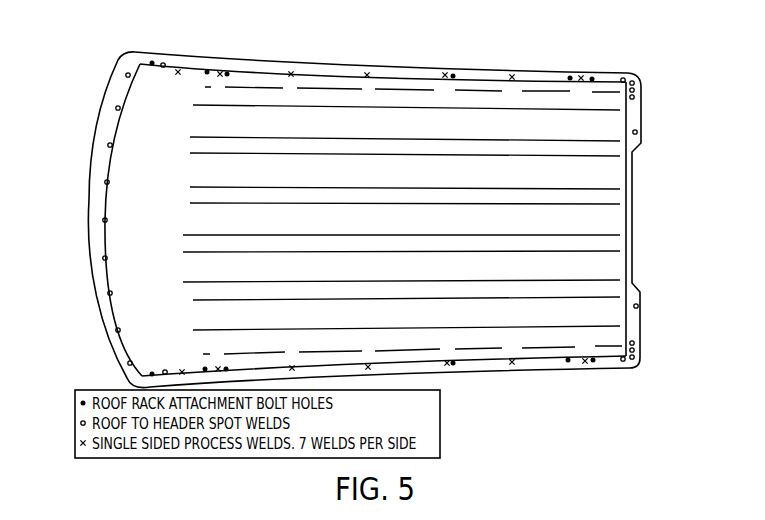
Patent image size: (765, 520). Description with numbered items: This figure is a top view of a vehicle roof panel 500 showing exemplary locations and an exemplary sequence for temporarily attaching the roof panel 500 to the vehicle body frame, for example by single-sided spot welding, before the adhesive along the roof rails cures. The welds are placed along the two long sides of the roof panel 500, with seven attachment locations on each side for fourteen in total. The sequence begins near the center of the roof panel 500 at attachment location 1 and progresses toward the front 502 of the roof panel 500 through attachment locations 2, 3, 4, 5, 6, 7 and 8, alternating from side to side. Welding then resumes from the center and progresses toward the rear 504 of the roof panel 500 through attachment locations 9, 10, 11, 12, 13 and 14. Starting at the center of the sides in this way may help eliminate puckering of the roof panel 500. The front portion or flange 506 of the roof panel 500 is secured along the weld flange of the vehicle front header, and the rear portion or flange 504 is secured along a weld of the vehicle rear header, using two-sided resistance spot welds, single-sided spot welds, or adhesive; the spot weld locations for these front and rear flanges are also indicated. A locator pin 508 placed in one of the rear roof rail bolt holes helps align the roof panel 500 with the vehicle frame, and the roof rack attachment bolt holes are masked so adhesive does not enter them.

The roof panel 500 is at (381, 229).
The front 502 is at (78, 262).
The rear portion or flange 504 is at (646, 264).
The front portion or flange 506 is at (113, 103).
The locator pin 508 is at (593, 78).
The attachment location 1 is at (368, 85).
The attachment location 2 is at (368, 355).
The attachment location 3 is at (292, 356).
The attachment location 4 is at (290, 84).
The attachment location 5 is at (218, 84).
The attachment location 6 is at (217, 358).
The attachment location 7 is at (183, 360).
The attachment location 8 is at (178, 82).
The attachment location 9 is at (447, 352).
The attachment location 10 is at (443, 85).
The attachment location 11 is at (511, 87).
The attachment location 12 is at (511, 351).
The attachment location 13 is at (584, 350).
The attachment location 14 is at (580, 88).